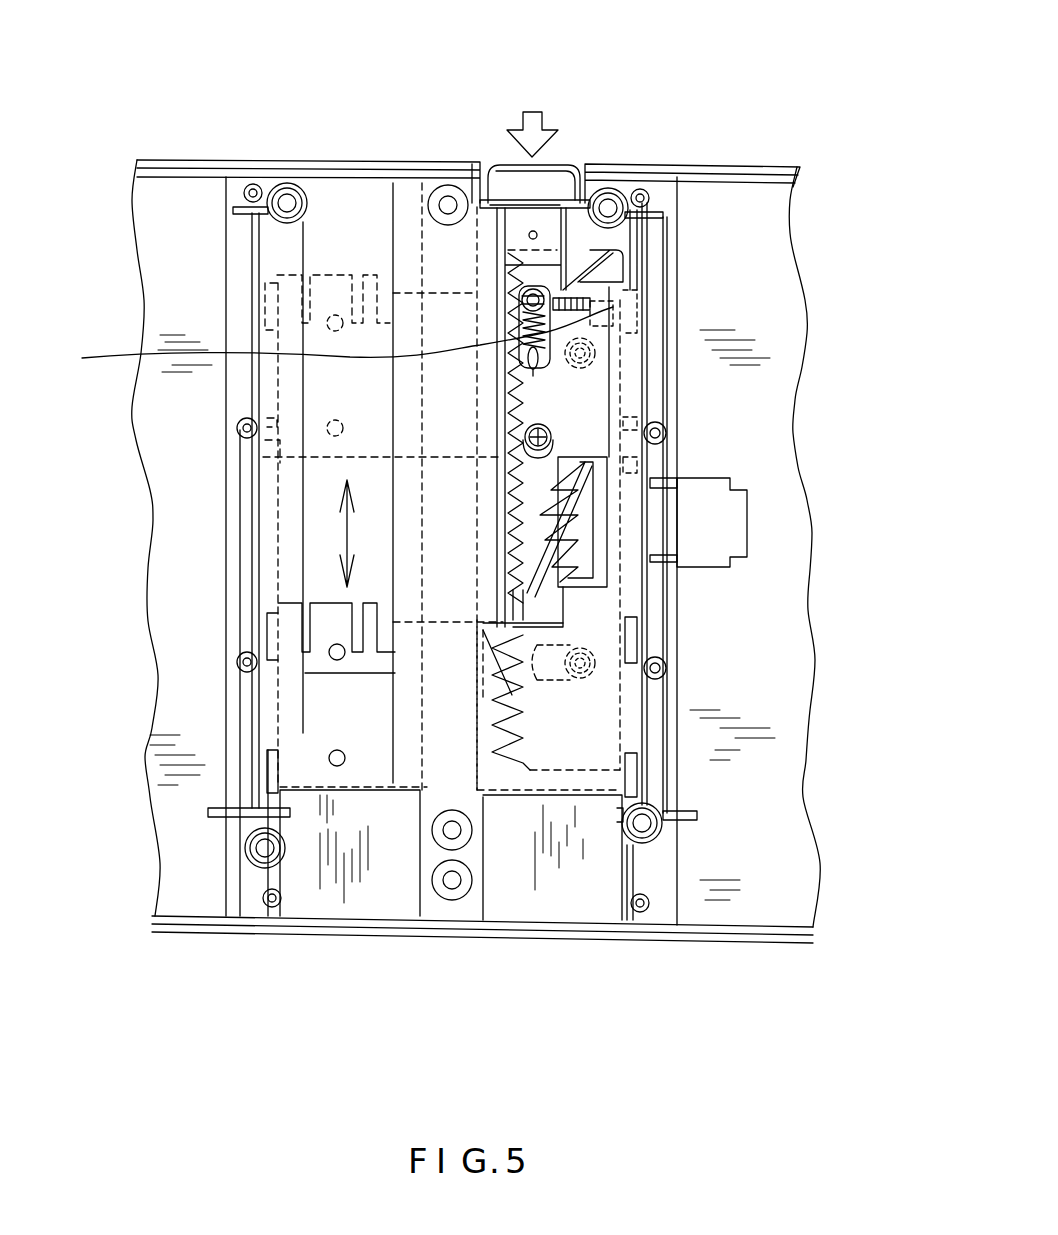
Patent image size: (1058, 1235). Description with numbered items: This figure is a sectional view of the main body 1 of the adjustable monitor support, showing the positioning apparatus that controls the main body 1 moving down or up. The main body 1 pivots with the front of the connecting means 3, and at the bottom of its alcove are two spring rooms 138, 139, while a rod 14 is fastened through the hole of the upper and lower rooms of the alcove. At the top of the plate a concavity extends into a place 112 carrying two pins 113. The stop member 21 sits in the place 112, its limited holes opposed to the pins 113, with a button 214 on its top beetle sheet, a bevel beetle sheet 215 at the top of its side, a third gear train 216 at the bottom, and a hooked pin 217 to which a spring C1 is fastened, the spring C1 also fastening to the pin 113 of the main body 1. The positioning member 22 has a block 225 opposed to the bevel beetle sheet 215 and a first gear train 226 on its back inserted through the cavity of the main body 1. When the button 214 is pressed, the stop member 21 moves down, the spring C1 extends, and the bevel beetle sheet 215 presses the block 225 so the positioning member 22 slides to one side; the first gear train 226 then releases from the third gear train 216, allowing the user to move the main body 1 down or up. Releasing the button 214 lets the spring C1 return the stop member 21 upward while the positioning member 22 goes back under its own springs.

The main body 1 is at (703, 163).
The connecting means 3 is at (300, 728).
The rod 14 is at (483, 800).
The stop member 21 is at (560, 412).
The positioning member 22 is at (597, 733).
The place 112 is at (543, 613).
The pin 113 is at (598, 301).
The spring room 138 is at (342, 895).
The spring room 139 is at (587, 895).
The button 214 is at (557, 167).
The bevel beetle sheet 215 is at (660, 244).
The third gear train 216 is at (580, 523).
The hooked pin 217 is at (548, 408).
The block 225 is at (612, 267).
The first gear train 226 is at (580, 565).
The spring C1 is at (330, 342).